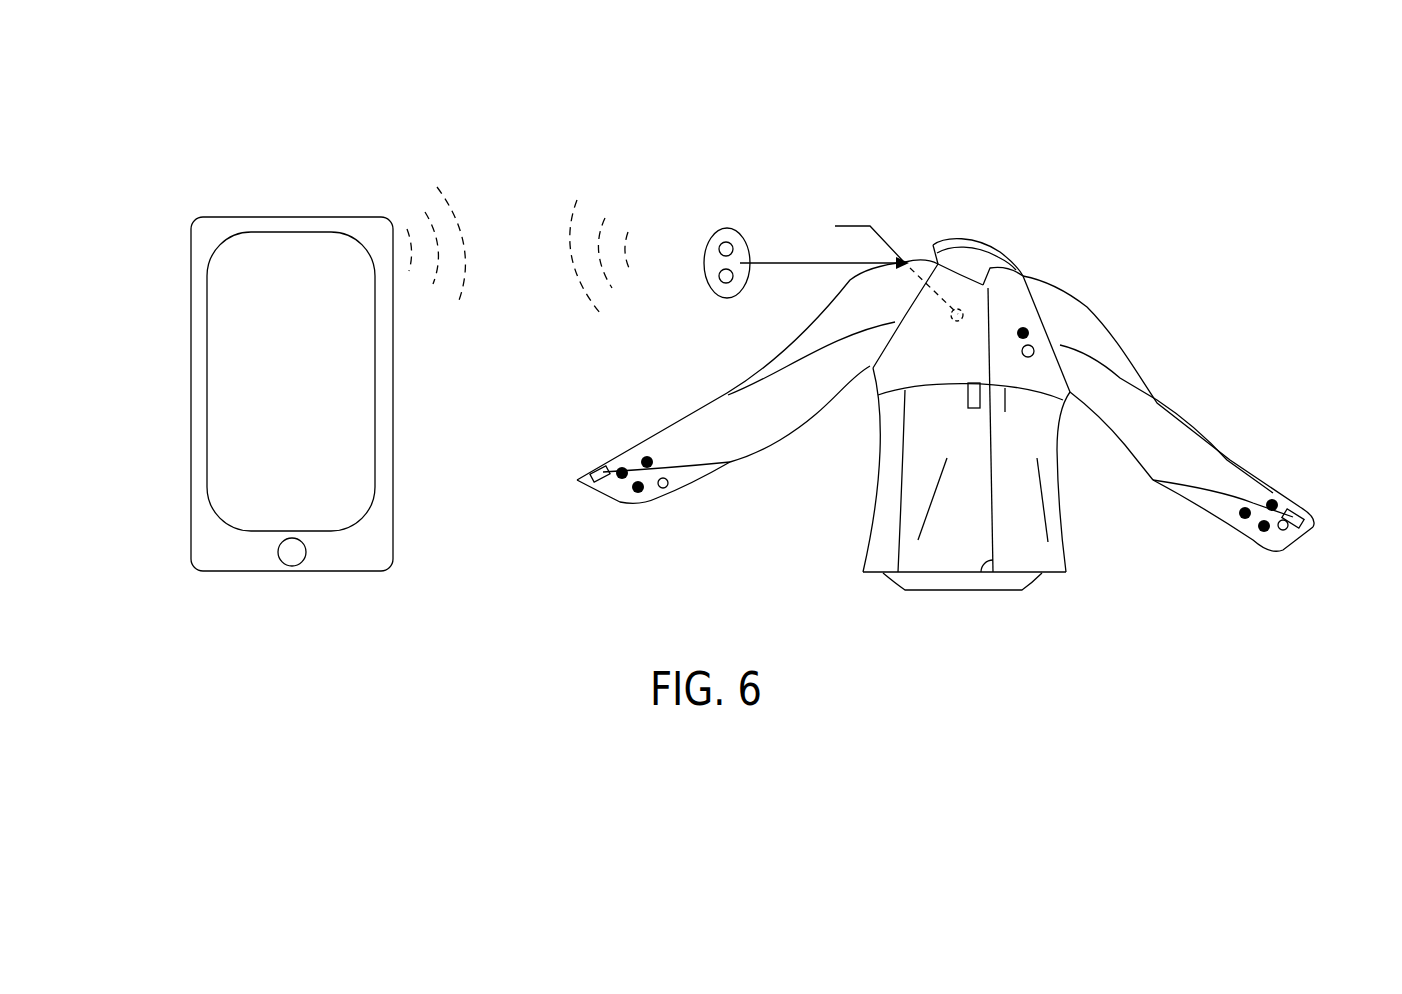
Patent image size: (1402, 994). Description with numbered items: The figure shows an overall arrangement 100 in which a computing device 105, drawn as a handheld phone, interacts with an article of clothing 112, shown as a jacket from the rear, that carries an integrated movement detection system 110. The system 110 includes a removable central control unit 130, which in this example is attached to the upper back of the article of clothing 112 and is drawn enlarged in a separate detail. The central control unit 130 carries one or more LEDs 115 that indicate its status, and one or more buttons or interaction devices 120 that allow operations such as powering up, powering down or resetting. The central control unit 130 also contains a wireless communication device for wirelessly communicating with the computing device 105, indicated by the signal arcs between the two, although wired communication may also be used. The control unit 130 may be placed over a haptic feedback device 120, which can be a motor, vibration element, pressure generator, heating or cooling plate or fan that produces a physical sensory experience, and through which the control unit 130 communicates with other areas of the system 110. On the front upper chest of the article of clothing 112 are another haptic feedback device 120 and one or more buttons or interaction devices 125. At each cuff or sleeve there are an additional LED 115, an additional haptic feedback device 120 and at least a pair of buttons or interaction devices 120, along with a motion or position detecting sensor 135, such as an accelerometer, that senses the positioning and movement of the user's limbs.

The garment system 100 is at (316, 116).
The computing device 105 is at (258, 216).
The integrated movement detection system 110 is at (1005, 268).
The article of clothing 112 is at (1098, 315).
The LED 115 is at (719, 278).
The haptic feedback device 120 is at (916, 299).
The buttons or interaction devices 125 is at (719, 248).
The removable central control unit 130 is at (738, 229).
The motion or position detecting sensor 135 is at (595, 467).